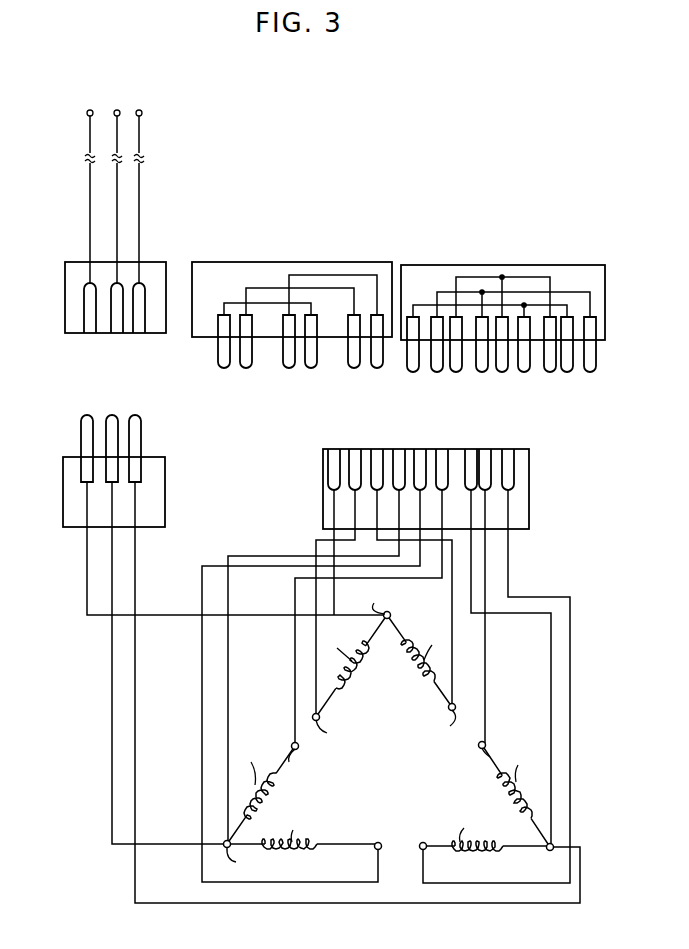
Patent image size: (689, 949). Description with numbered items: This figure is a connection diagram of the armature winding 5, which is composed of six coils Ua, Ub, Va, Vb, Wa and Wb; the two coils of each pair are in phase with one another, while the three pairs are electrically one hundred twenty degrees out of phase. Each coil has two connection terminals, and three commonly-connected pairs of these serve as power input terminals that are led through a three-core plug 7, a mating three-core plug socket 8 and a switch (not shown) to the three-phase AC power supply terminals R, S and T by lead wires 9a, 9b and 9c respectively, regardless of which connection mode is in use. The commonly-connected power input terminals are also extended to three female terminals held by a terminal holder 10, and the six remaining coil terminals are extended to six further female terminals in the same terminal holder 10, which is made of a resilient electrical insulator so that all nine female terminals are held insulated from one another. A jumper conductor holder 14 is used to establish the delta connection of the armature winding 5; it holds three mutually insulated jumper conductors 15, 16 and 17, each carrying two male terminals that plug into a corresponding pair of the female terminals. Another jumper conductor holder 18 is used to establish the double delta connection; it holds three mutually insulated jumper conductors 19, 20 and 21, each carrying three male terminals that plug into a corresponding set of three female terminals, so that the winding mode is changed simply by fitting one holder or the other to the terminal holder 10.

The armature winding 5 is at (399, 713).
The three-core plug 7 is at (66, 476).
The three-core plug socket 8 is at (64, 304).
The lead wire 9a is at (89, 196).
The lead wire 9b is at (116, 228).
The lead wire 9c is at (140, 214).
The terminal holder 10 is at (522, 498).
The jumper conductor holder 14 is at (220, 274).
The jumper conductor 15 is at (262, 303).
The jumper conductor 16 is at (316, 288).
The jumper conductor 17 is at (347, 275).
The jumper conductor holder 18 is at (572, 280).
The jumper conductor 19 is at (426, 304).
The jumper conductor 20 is at (473, 290).
The jumper conductor 21 is at (517, 276).